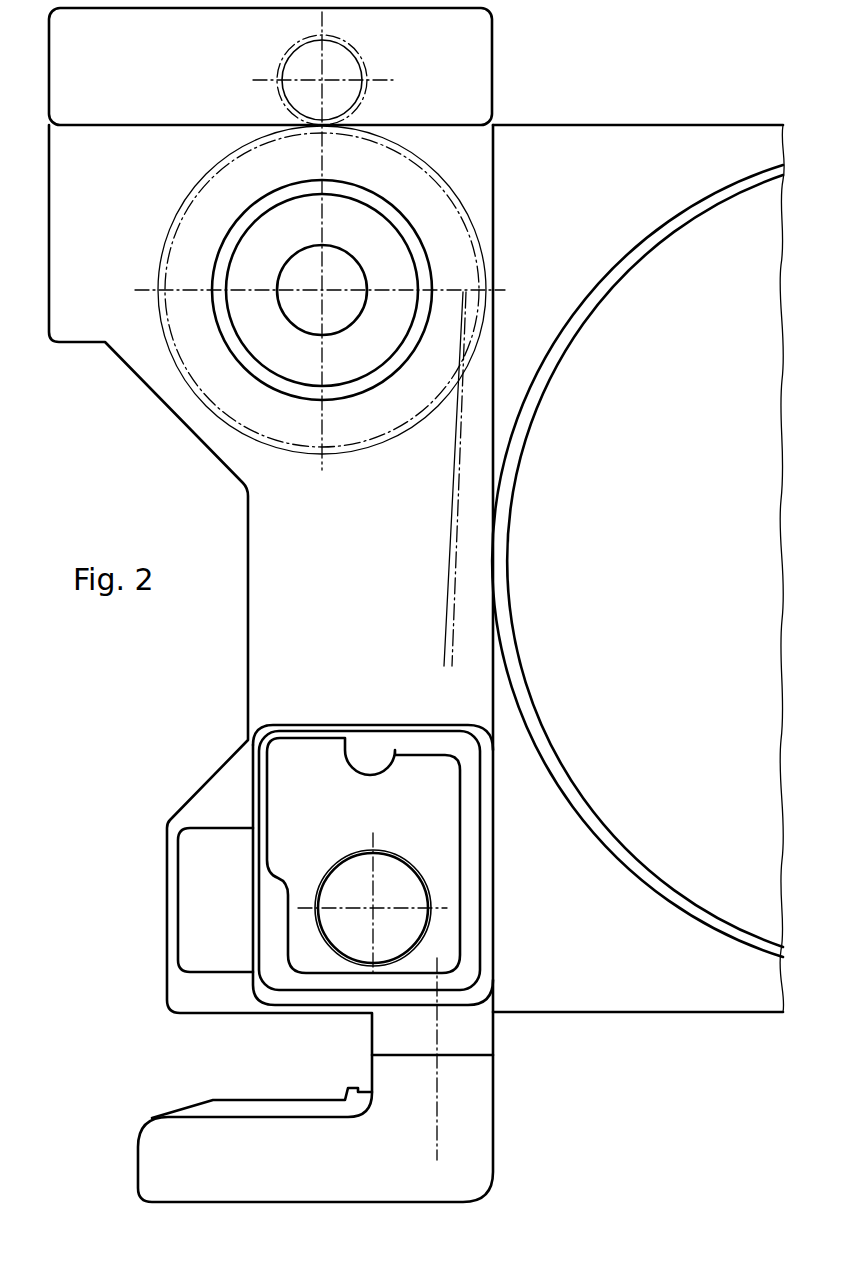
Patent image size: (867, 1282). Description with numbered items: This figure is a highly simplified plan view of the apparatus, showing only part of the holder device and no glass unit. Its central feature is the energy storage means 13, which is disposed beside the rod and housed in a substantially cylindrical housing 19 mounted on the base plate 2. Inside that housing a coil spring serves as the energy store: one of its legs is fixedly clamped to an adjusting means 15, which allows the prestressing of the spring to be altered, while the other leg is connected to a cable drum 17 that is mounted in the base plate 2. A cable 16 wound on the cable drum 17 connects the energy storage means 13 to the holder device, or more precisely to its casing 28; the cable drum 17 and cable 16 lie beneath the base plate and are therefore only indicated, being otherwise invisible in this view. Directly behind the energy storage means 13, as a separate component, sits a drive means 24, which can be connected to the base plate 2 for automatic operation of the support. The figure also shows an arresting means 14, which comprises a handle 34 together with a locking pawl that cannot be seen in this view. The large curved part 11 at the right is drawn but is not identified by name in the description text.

The base plate 2 is at (532, 145).
The drive means 24 is at (466, 38).
The housing 19 is at (237, 232).
The cable drum 17 is at (178, 228).
The adjusting means 15 is at (250, 278).
The energy storage means 13 is at (236, 370).
The cable 16 is at (456, 558).
The circular saw blade 11 is at (622, 278).
The casing 28 is at (264, 733).
The arresting means 14 is at (437, 1108).
The handle 34 is at (161, 1143).